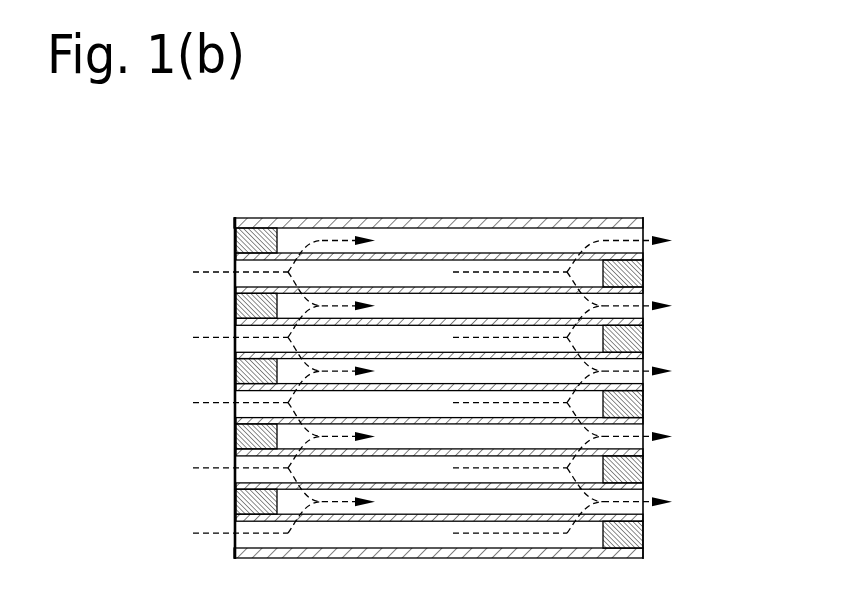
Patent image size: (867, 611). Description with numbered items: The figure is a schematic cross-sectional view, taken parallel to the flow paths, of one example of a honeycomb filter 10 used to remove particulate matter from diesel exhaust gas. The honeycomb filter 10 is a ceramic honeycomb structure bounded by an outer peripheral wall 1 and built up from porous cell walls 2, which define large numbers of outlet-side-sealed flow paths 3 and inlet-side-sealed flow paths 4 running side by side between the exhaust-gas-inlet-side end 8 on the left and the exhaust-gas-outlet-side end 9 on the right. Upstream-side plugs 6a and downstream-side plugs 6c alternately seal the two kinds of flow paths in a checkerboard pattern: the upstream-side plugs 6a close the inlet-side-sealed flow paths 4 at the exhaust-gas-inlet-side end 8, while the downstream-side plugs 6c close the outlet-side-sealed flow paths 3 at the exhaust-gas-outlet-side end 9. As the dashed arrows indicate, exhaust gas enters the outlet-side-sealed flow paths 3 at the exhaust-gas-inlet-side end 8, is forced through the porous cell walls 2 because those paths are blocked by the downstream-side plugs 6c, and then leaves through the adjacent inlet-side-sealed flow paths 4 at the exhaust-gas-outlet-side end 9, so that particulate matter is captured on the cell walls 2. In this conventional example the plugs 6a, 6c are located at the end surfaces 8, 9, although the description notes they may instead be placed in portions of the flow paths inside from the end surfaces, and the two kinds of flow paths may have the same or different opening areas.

The honeycomb filter 10 is at (237, 184).
The outer peripheral wall 1 is at (315, 222).
The porous cell walls 2 is at (526, 255).
The outlet-side-sealed flow paths 3 is at (389, 272).
The inlet-side-sealed flow paths 4 is at (452, 305).
The upstream-side plugs 6a is at (252, 307).
The downstream-side plugs 6c is at (630, 335).
The exhaust-gas-inlet-side end 8 is at (234, 398).
The exhaust-gas-outlet-side end 9 is at (645, 376).